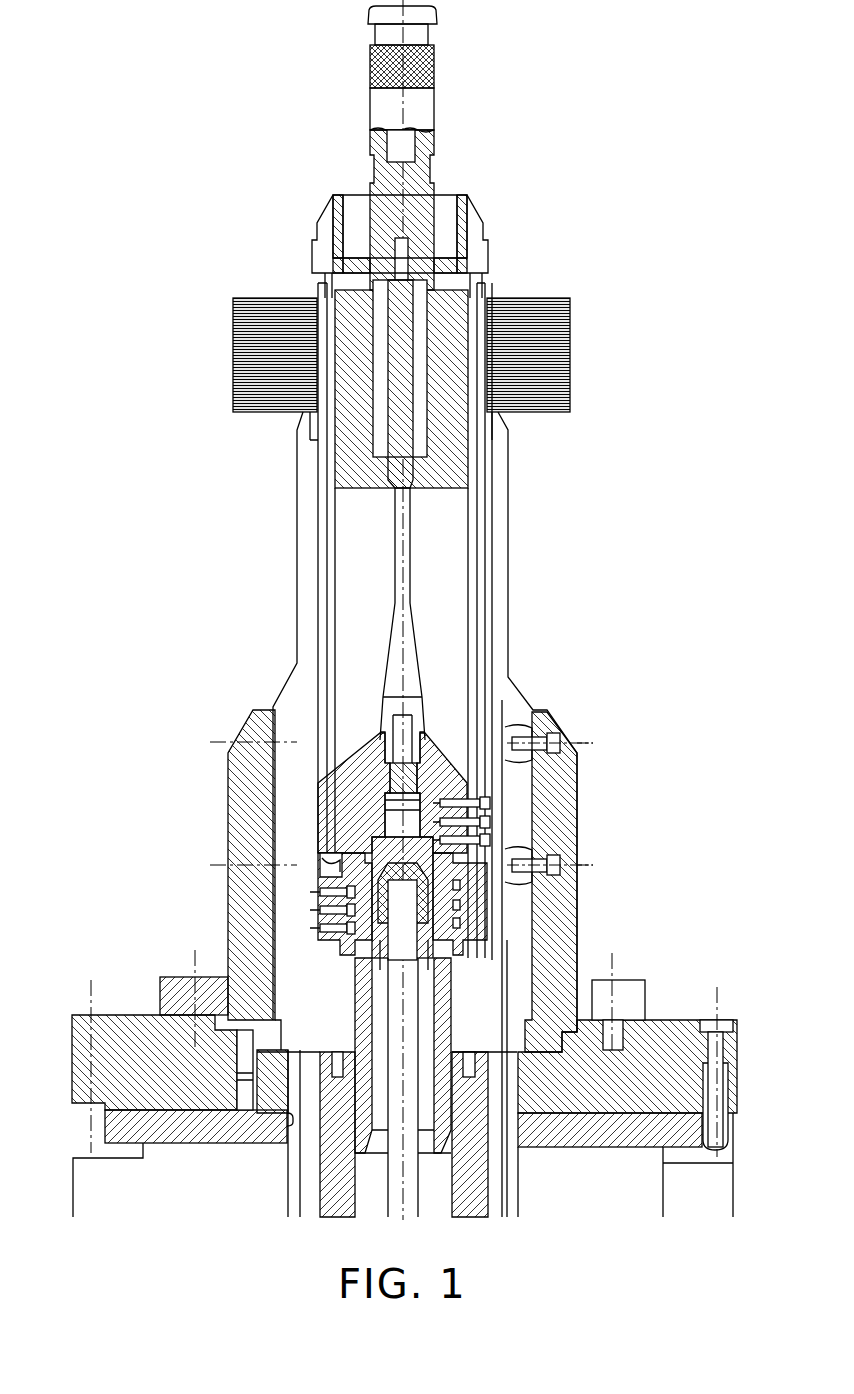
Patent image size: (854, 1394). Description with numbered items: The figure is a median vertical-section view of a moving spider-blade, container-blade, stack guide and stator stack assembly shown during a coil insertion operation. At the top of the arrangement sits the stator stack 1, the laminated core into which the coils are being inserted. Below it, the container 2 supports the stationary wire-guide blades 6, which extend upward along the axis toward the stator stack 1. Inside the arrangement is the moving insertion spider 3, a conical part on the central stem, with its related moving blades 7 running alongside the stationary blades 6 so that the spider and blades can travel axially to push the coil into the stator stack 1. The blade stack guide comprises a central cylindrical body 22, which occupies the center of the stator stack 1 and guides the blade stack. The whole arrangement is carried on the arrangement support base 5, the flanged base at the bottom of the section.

The stator stack 1 is at (578, 340).
The container 2 is at (322, 877).
The moving insertion spider 3 is at (437, 765).
The arrangement support base 5 is at (652, 1040).
The stationary wire-guide blades 6 is at (320, 863).
The moving blades 7 is at (483, 293).
The central cylindrical body 22 is at (440, 312).